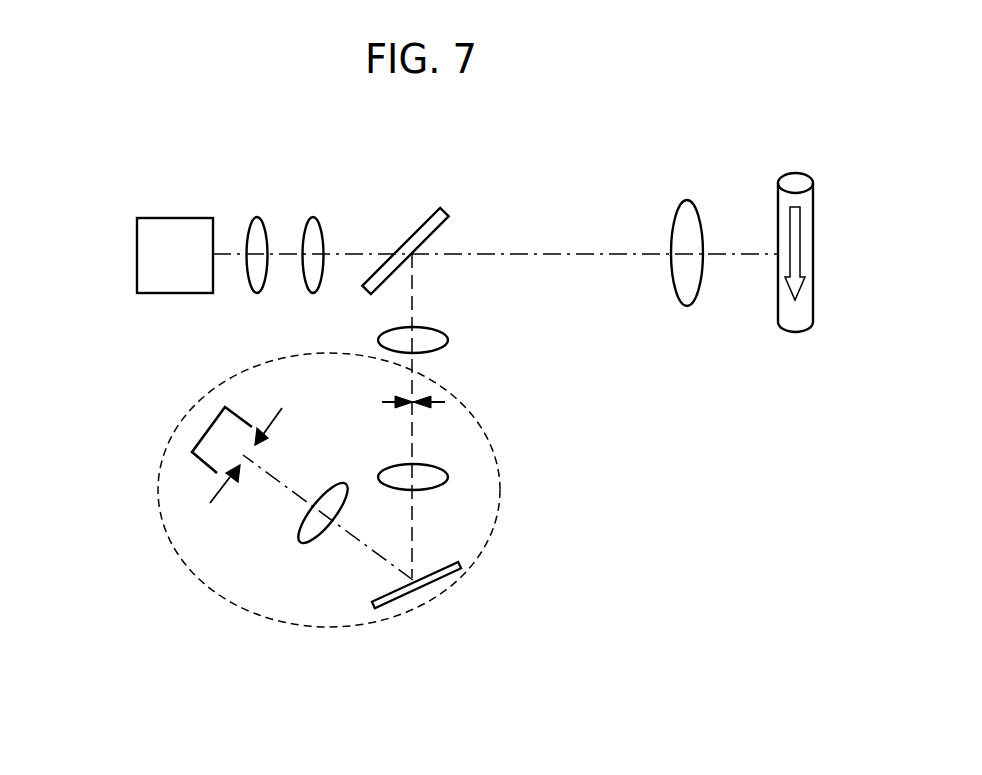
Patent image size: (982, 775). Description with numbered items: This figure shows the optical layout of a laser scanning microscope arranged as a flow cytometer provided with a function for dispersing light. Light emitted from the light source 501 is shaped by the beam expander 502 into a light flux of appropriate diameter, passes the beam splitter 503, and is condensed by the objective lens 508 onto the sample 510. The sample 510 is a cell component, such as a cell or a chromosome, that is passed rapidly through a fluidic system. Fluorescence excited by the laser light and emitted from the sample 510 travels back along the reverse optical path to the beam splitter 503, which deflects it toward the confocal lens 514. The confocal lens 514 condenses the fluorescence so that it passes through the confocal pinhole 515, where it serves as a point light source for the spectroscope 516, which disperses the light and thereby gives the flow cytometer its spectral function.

The light source 501 is at (183, 218).
The beam expander 502 is at (333, 206).
The beam splitter 503 is at (415, 228).
The objective lens 508 is at (685, 307).
The sample 510 is at (795, 333).
The confocal lens 514 is at (377, 335).
The confocal pinhole 515 is at (390, 405).
The spectroscope 516 is at (245, 612).